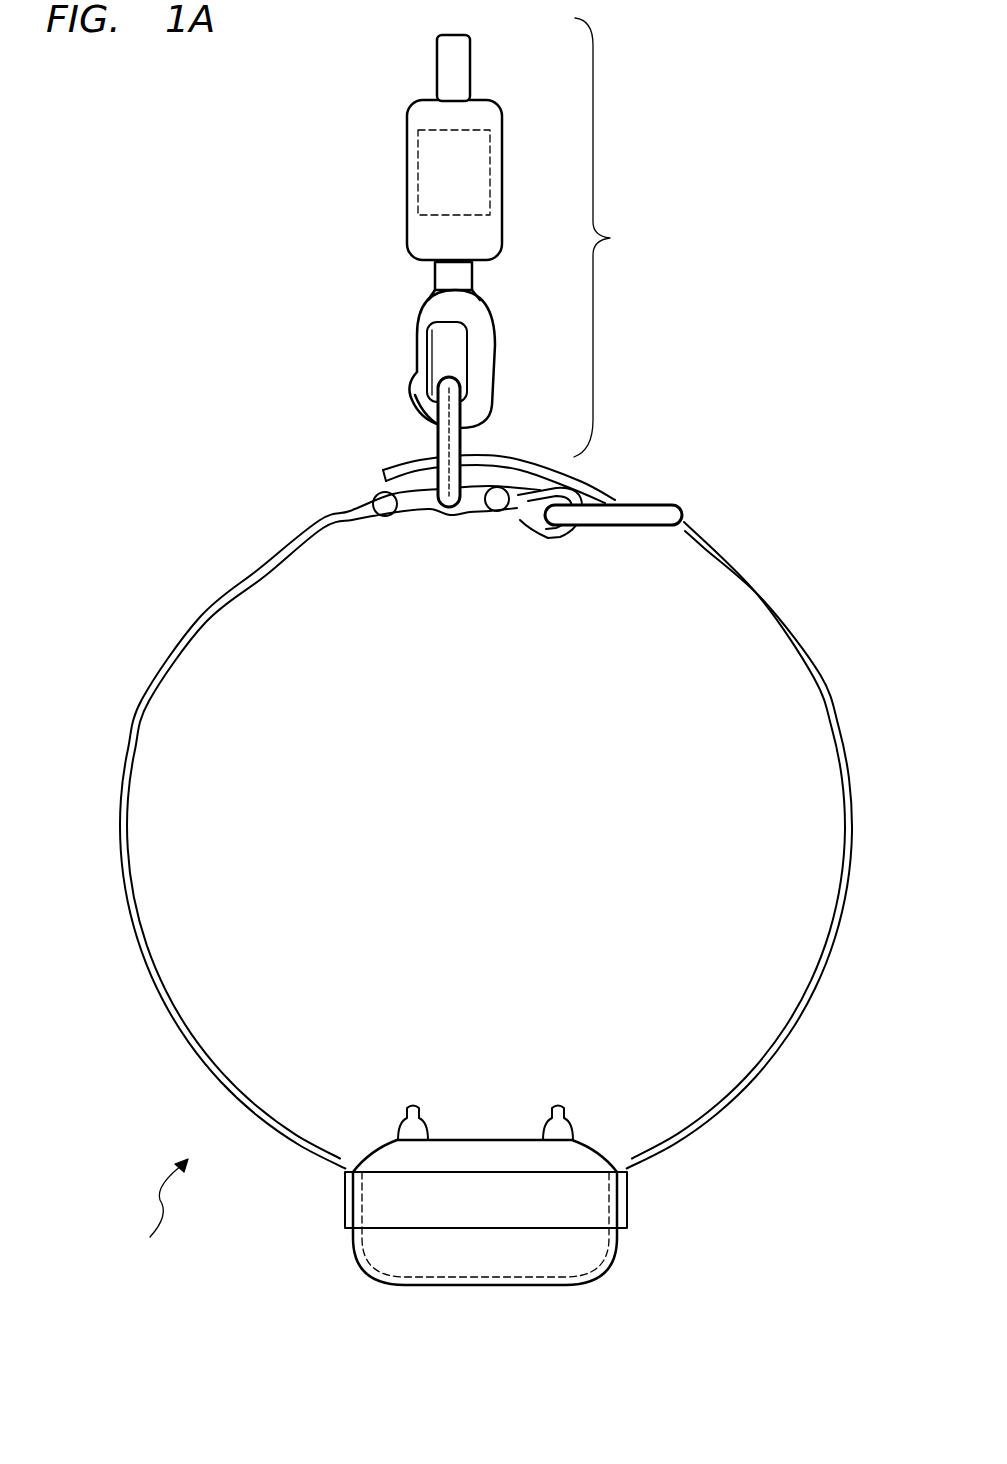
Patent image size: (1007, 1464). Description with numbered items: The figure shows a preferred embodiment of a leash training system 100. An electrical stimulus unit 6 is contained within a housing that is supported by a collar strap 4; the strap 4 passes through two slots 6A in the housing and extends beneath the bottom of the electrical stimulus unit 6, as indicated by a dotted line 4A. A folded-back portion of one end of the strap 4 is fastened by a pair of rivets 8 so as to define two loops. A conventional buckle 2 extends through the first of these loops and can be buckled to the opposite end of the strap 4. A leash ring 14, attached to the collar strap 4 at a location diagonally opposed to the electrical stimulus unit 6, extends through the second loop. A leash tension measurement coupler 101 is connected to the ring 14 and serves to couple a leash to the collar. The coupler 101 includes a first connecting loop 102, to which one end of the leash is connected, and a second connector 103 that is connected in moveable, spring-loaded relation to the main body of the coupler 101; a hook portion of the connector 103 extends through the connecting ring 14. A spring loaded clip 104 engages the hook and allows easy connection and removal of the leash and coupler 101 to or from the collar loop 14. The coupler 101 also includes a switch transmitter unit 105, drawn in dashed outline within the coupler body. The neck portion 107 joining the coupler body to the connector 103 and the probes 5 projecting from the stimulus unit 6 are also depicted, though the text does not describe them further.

The leash training system 100 is at (150, 1209).
The leash tension measurement coupler 101 is at (525, 237).
The first connecting loop 102 is at (437, 70).
The second connector 103 is at (487, 375).
The spring loaded clip 104 is at (418, 352).
The switch transmitter unit 105 is at (418, 175).
The neck connector 107 is at (435, 278).
The leash ring 14 is at (432, 440).
The collar strap 4 is at (232, 565).
The dotted line 4A is at (482, 1280).
The buckle 2 is at (685, 515).
The rivets 8 is at (385, 525).
The electrode probes 5 is at (413, 1104).
The electrical stimulus unit 6 is at (496, 1207).
The slots 6A is at (362, 1202).